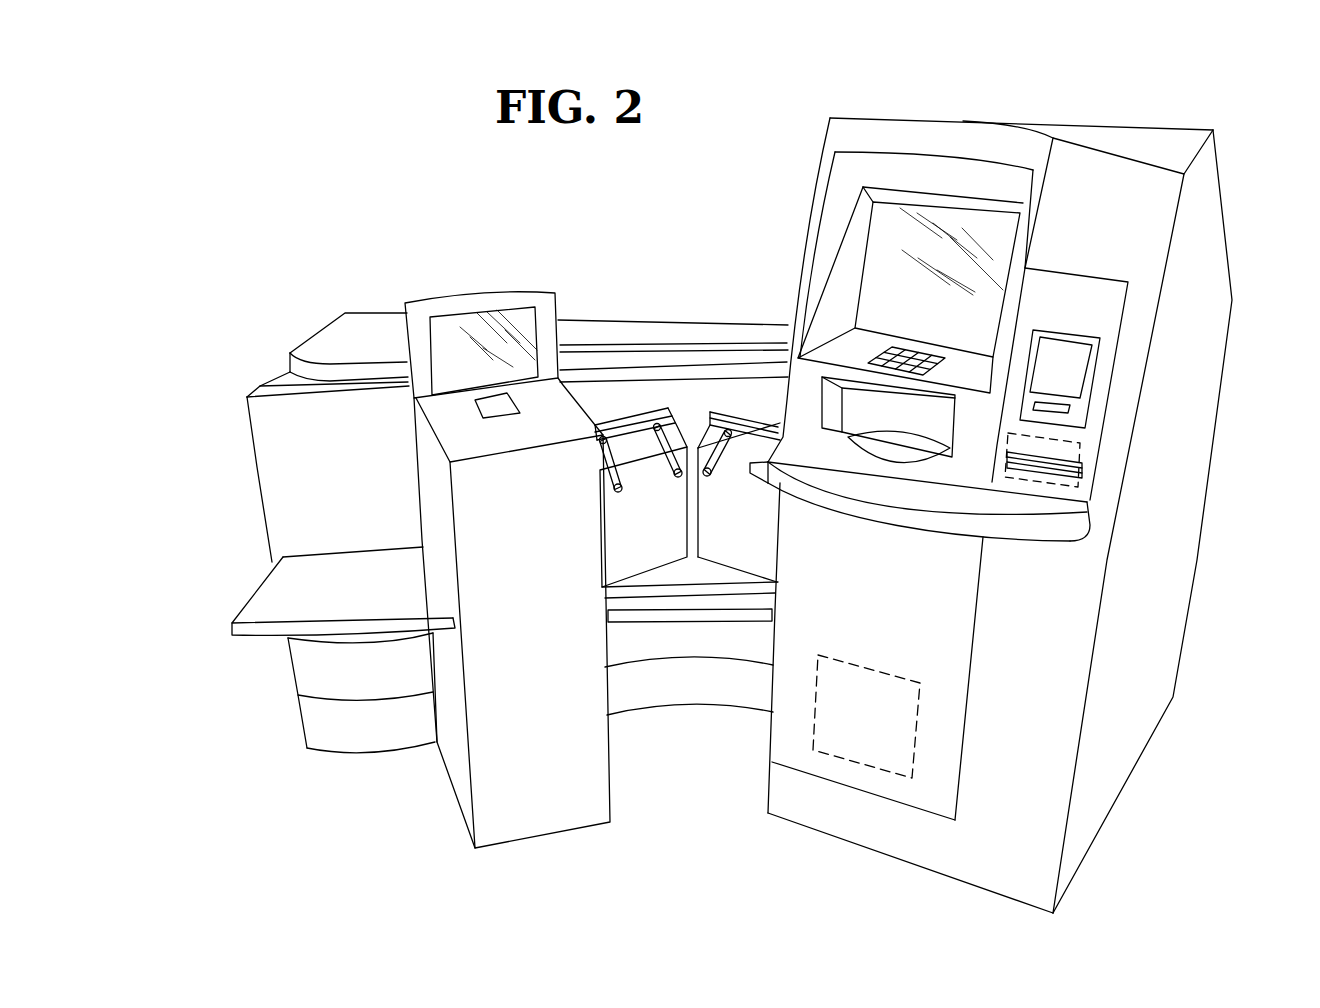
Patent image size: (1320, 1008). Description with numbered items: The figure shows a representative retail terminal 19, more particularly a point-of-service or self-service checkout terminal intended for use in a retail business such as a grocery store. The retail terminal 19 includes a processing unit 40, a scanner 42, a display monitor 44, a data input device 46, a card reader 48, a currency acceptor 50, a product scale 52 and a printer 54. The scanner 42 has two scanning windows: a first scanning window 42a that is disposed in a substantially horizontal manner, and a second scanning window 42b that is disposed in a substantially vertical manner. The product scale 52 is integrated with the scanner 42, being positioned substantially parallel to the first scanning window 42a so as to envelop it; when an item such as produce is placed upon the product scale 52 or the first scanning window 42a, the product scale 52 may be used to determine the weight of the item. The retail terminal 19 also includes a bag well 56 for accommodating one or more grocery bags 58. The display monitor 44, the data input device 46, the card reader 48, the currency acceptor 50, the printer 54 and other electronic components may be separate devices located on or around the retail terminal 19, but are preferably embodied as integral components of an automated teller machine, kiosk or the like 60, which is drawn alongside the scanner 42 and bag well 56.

The retail terminal 19 is at (268, 247).
The scanner 42 is at (530, 291).
The second scanning window 42b is at (446, 325).
The first scanning window 42a is at (493, 412).
The product scale 52 is at (457, 443).
The grocery bags 58 is at (620, 530).
The bag well 56 is at (694, 580).
The automated teller machine (ATM), kiosk, or the like 60 is at (1074, 106).
The display monitor 44 is at (882, 237).
The data input device 46 is at (917, 350).
The currency acceptor 50 is at (1072, 360).
The card reader 48 is at (1070, 408).
The printer 54 is at (1081, 454).
The processing unit 40 is at (862, 683).